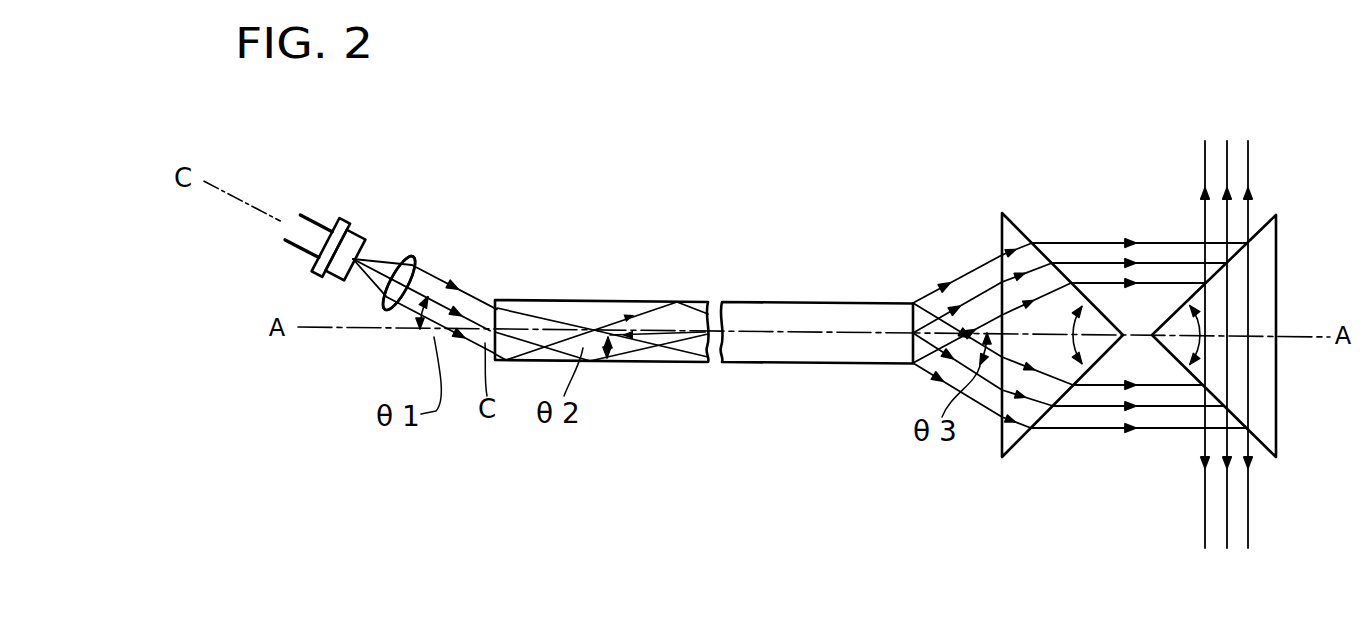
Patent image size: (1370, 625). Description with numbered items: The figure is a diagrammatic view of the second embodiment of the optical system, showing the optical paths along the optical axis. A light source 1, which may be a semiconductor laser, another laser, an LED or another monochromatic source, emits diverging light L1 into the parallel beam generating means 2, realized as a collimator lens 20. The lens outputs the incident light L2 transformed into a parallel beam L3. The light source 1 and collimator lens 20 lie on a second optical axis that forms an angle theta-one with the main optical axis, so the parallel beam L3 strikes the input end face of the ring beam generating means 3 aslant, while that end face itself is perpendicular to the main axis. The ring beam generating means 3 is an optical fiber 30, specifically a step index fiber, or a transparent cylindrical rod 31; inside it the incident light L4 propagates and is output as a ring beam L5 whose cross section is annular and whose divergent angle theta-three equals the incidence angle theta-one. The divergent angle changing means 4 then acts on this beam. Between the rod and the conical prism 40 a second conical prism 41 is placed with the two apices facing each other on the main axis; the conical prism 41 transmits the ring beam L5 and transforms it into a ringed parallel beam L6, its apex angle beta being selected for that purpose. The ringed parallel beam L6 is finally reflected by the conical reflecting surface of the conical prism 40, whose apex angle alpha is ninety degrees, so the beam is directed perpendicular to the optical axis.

The light source 1 is at (340, 228).
The parallel beam generating means 2 is at (395, 311).
The collimator lens 20 is at (381, 307).
The ring beam generating means 3 is at (704, 373).
The optical fiber 30 is at (803, 374).
The cylindrical rod 31 is at (817, 333).
The divergent angle changing means 4 is at (1252, 344).
The conical prism 40 is at (1277, 230).
The conical prism 41 is at (1022, 230).
The light L1 is at (382, 257).
The incident light L2 is at (414, 257).
The parallel beam L3 is at (479, 300).
The incident light L4 is at (568, 322).
The ring beam L5 is at (935, 297).
The ringed parallel beam L6 is at (1159, 241).